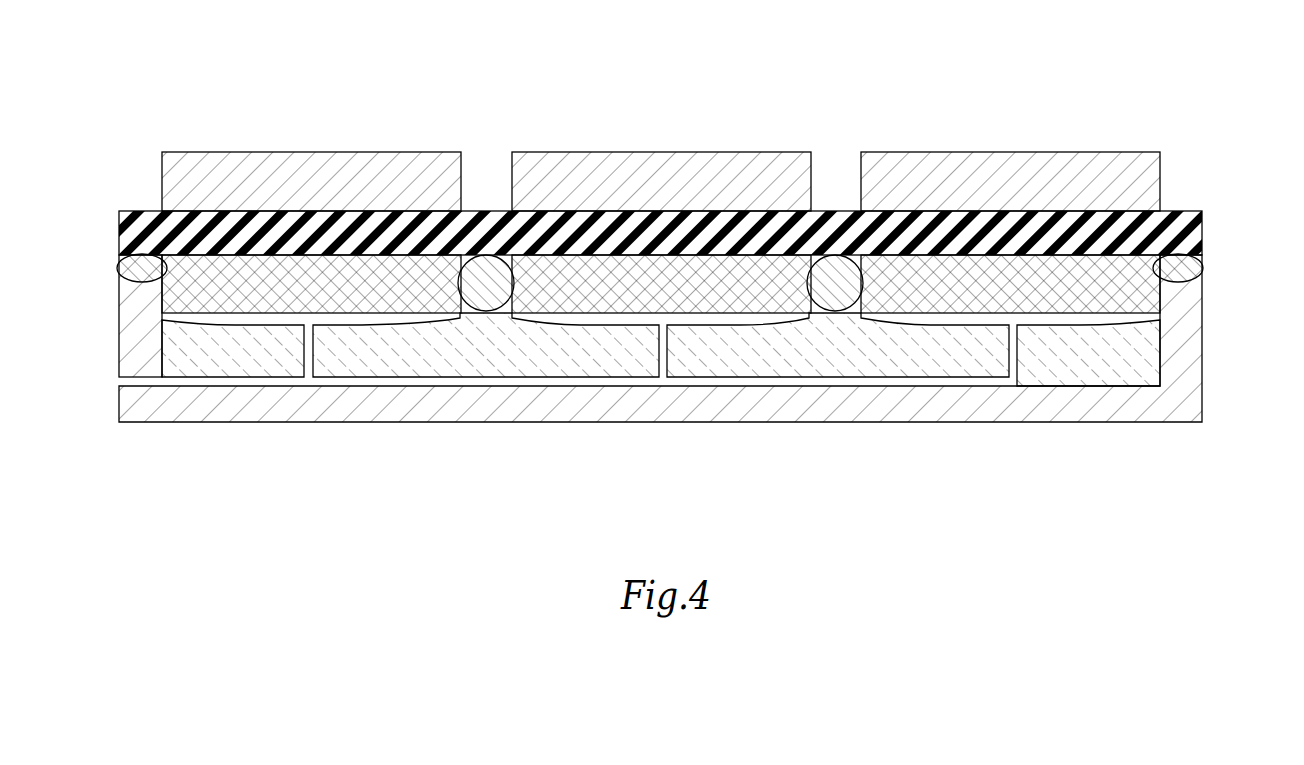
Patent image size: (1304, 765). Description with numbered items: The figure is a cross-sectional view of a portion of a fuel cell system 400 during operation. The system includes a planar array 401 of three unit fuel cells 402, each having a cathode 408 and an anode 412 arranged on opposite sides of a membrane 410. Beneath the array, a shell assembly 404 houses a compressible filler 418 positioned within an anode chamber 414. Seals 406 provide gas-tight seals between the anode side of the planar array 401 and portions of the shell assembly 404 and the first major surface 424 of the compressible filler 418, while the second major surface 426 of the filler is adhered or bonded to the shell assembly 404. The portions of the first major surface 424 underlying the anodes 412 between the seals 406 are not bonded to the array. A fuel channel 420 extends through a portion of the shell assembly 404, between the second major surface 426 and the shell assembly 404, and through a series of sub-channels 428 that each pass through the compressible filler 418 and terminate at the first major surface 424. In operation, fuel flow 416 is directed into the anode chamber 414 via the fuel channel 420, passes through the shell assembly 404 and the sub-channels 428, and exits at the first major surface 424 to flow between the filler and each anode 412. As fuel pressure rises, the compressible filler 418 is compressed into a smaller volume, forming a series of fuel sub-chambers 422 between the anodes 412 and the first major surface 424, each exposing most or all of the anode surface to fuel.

The fuel cell system 400 is at (1213, 47).
The planar array 401 is at (1202, 211).
The unit fuel cell 402 is at (310, 152).
The shell assembly 404 is at (1204, 323).
The seal 406 is at (133, 268).
The cathode 408 is at (462, 181).
The membrane 410 is at (1203, 233).
The anode 412 is at (1142, 300).
The anode chamber 414 is at (955, 387).
The fuel flow 416 is at (82, 382).
The compressible filler 418 is at (1140, 363).
The fuel channel 420 is at (147, 386).
The fuel sub-chamber 422 is at (365, 318).
The first major surface 424 is at (197, 318).
The second major surface 426 is at (1061, 388).
The sub-channel 428 is at (318, 357).